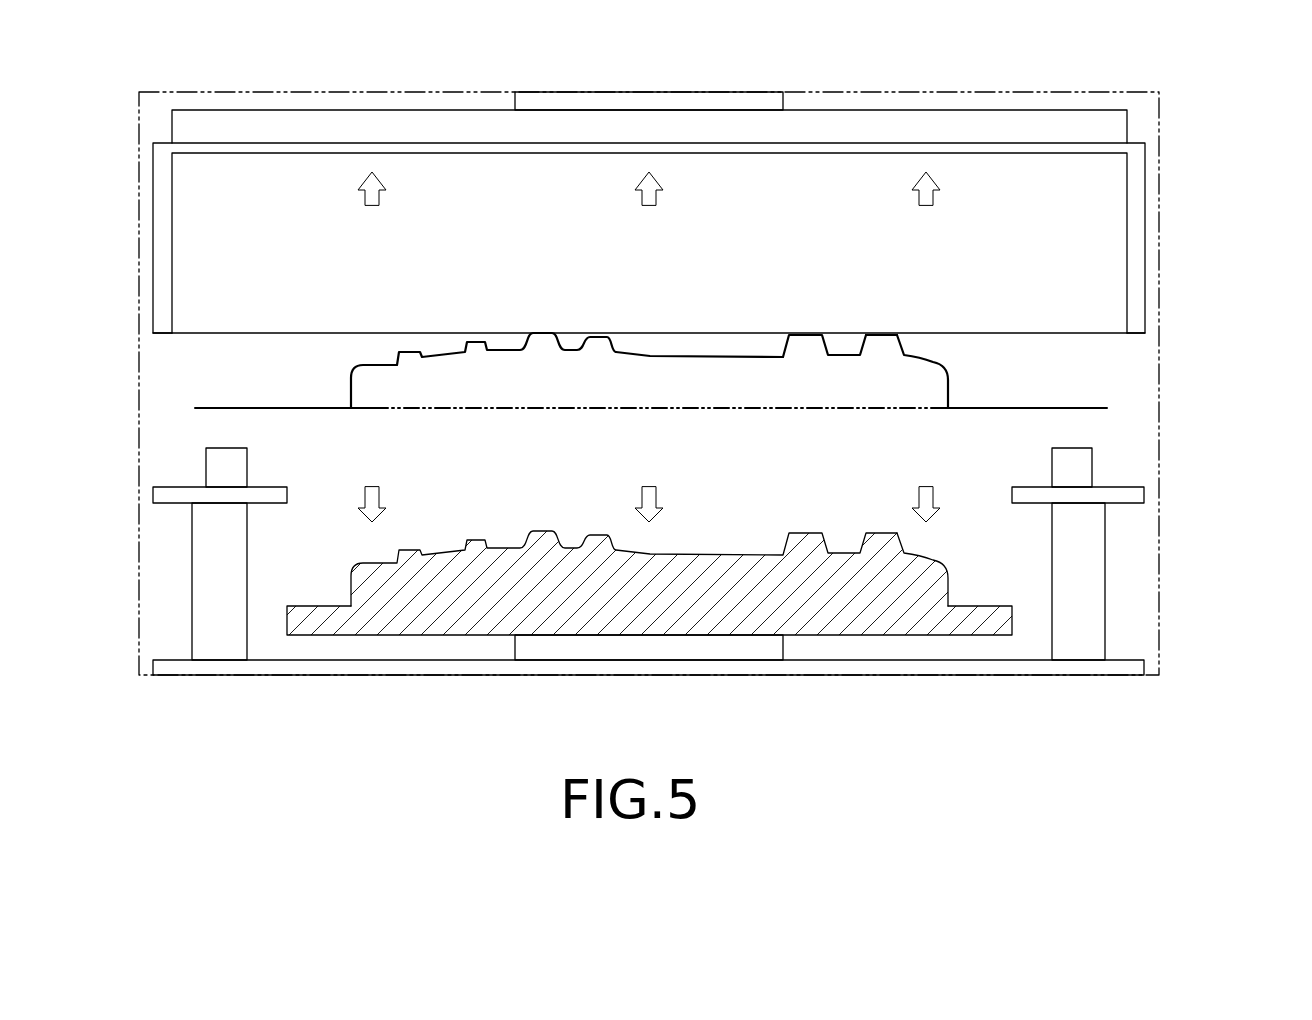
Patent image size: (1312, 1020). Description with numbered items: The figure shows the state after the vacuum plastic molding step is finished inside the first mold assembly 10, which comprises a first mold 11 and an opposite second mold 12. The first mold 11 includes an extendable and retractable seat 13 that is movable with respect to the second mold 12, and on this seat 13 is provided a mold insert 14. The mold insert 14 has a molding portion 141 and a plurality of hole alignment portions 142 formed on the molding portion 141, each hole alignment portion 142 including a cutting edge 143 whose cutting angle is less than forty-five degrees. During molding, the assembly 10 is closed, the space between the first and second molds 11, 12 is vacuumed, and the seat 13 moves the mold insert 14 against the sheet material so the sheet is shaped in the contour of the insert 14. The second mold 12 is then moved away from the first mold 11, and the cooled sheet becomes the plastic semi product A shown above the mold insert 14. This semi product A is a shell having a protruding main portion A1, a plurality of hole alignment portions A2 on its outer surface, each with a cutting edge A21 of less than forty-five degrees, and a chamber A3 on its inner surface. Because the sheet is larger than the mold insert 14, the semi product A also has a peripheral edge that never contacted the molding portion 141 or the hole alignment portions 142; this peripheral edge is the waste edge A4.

The first mold assembly 10 is at (1243, 285).
The first mold 11 is at (648, 618).
The second mold 12 is at (1135, 316).
The extendable and retractable seat 13 is at (585, 648).
The mold insert 14 is at (652, 654).
The molding portion 141 is at (741, 603).
The hole alignment portions 142 is at (885, 545).
The cutting edge 143 is at (960, 632).
The plastic semi product A is at (651, 327).
The protruding main portion A1 is at (938, 360).
The hole alignment portions A2 is at (885, 352).
The cutting edge A21 is at (897, 336).
The chamber A3 is at (635, 385).
The waste edge A4 is at (1027, 408).